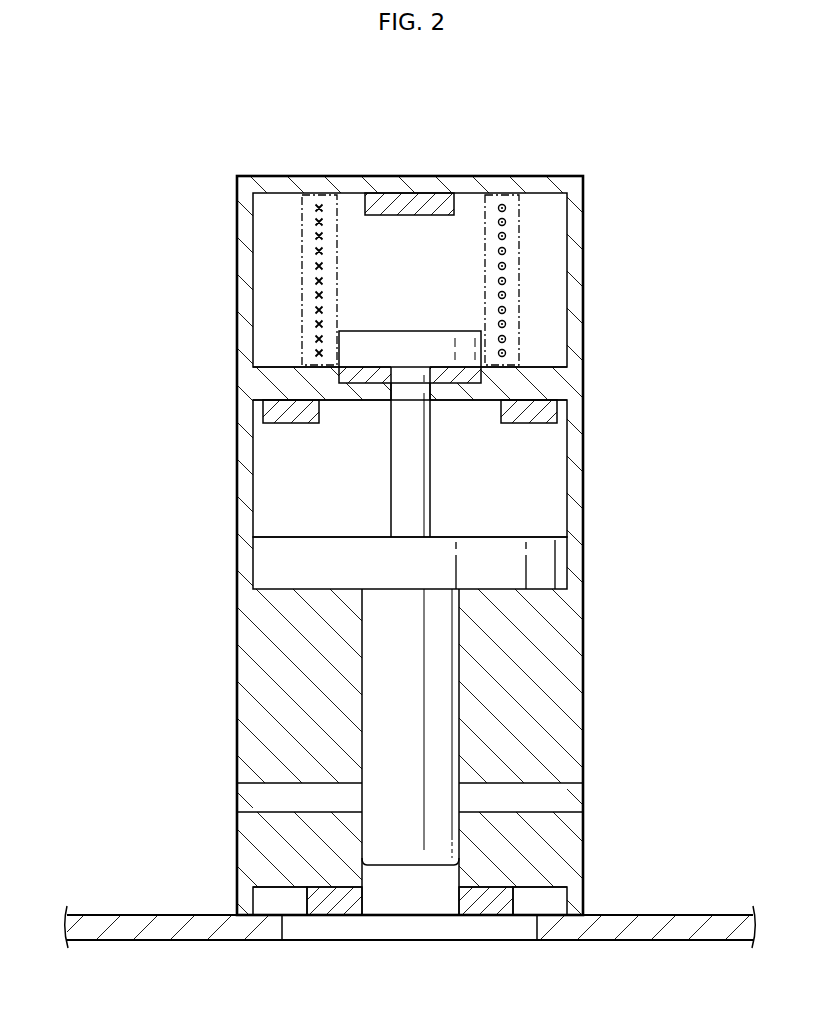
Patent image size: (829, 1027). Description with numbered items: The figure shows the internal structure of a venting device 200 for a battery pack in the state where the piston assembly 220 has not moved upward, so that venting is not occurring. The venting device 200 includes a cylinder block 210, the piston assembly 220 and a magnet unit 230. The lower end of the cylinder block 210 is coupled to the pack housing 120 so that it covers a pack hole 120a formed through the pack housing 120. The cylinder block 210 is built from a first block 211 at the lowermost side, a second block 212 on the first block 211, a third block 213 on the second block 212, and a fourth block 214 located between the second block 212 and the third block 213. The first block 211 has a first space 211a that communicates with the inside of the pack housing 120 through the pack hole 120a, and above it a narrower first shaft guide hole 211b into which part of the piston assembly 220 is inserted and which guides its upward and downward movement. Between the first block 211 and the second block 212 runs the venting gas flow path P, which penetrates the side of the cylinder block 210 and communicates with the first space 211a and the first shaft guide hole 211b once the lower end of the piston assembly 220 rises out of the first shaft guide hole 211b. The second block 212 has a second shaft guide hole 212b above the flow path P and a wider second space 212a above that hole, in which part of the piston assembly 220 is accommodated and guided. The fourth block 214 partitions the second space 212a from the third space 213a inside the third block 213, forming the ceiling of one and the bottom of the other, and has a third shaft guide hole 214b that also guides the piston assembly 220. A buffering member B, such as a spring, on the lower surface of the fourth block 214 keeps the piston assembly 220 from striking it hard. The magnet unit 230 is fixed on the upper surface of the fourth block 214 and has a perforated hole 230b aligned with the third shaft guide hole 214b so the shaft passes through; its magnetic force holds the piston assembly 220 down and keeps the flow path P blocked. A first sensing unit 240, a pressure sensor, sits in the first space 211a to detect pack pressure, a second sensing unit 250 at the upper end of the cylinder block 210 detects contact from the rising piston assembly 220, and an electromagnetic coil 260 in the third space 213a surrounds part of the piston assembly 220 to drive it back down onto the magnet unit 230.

The venting device 200 is at (315, 137).
The cylinder block 210 is at (231, 687).
The first block 211 is at (583, 861).
The first space 211a is at (552, 892).
The first shaft guide hole 211b is at (457, 830).
The second block 212 is at (583, 485).
The second space 212a is at (552, 441).
The second shaft guide hole 212b is at (457, 650).
The third block 213 is at (583, 272).
The third space 213a is at (552, 226).
The fourth block 214 is at (548, 384).
The third shaft guide hole 214b is at (426, 397).
The piston assembly 220 is at (272, 562).
The magnet unit 230 is at (340, 372).
The perforated hole 230b is at (393, 373).
The first sensing unit 240 is at (340, 905).
The second sensing unit 250 is at (410, 200).
The electromagnetic coil 260 is at (300, 264).
The buffering member B is at (275, 411).
The venting gas flow path P is at (273, 786).
The pack housing 120 is at (712, 915).
The pack hole 120a is at (314, 930).